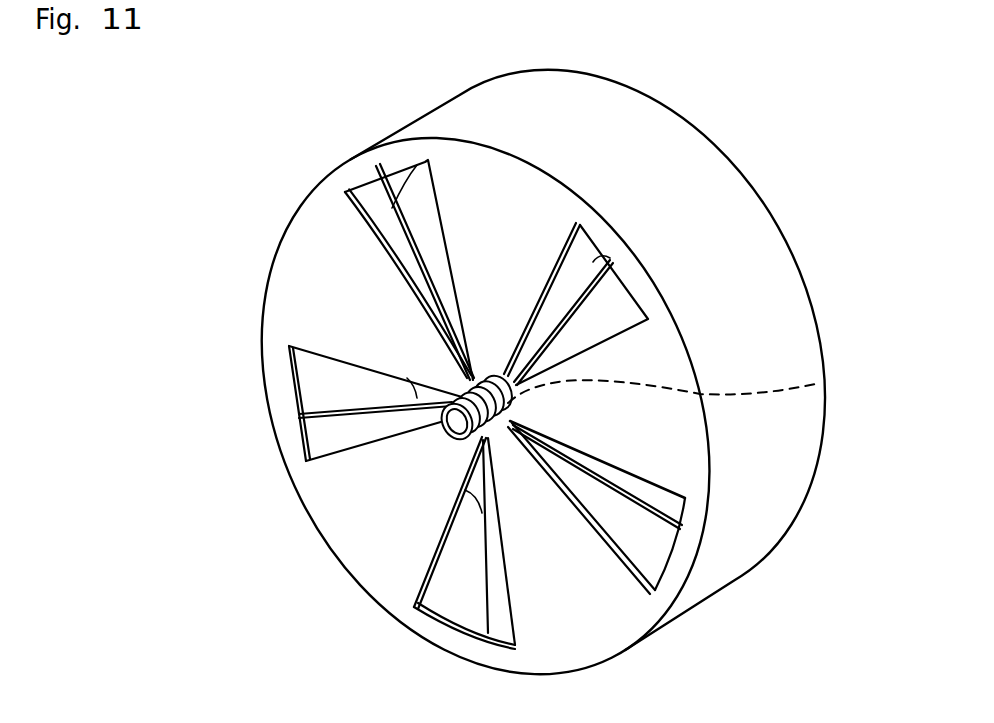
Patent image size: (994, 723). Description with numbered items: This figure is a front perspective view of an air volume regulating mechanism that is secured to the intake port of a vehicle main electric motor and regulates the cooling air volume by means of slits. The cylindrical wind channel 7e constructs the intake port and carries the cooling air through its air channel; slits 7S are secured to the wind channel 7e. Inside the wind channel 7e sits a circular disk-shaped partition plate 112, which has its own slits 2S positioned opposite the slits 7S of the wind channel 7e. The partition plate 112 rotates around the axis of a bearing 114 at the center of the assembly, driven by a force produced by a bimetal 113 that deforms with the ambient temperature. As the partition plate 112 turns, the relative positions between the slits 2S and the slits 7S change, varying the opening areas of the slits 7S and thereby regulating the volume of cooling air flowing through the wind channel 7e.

The wind channel 7e is at (698, 162).
The partition plate 112 is at (561, 404).
The bimetal 113 is at (460, 392).
The bearing 114 is at (820, 383).
The slits 7S is at (553, 284).
The slits 2S is at (547, 344).